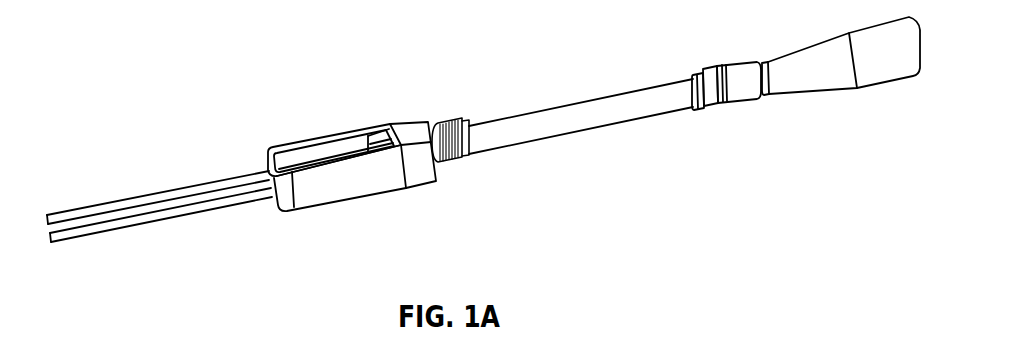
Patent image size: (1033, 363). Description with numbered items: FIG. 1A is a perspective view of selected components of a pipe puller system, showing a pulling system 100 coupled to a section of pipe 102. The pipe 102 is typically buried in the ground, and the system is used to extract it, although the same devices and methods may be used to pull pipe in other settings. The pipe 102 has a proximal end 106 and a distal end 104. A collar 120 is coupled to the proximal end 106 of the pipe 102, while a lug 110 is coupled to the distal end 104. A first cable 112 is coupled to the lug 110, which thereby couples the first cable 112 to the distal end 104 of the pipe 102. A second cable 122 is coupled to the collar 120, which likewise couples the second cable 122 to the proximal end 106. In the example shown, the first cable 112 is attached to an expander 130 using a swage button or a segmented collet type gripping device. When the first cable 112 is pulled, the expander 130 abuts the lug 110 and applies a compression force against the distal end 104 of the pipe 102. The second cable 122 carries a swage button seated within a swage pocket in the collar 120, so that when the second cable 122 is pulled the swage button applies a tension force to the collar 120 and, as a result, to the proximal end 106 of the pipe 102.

The pulling system 100 is at (604, 161).
The pipe 102 is at (603, 107).
The distal end 104 is at (695, 73).
The proximal end 106 is at (452, 123).
The lug 110 is at (735, 100).
The first cable 112 is at (137, 200).
The collar 120 is at (417, 164).
The second cable 122 is at (137, 215).
The expander 130 is at (823, 83).